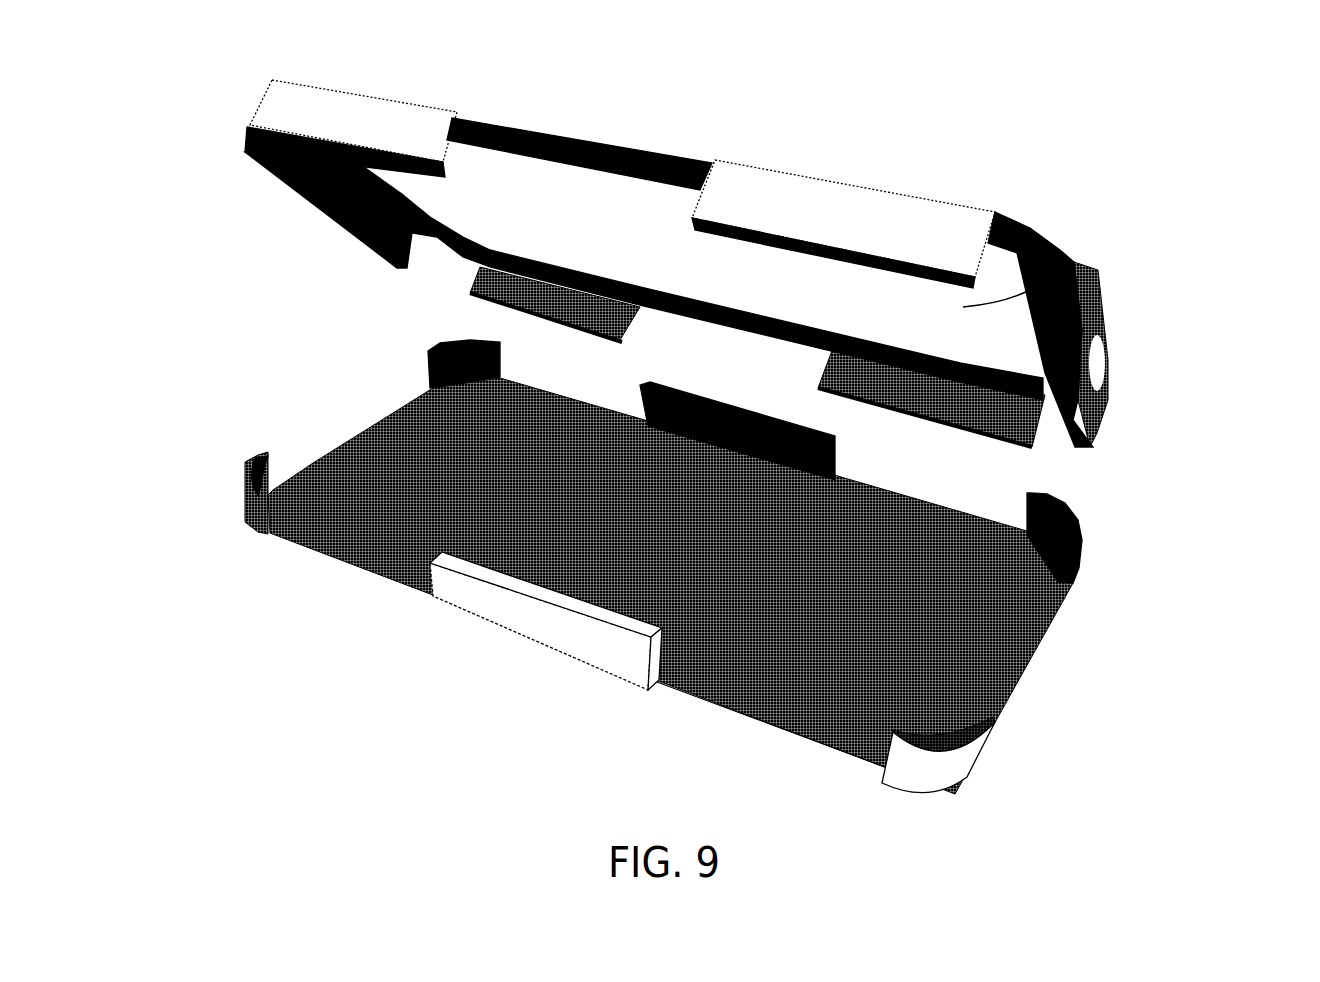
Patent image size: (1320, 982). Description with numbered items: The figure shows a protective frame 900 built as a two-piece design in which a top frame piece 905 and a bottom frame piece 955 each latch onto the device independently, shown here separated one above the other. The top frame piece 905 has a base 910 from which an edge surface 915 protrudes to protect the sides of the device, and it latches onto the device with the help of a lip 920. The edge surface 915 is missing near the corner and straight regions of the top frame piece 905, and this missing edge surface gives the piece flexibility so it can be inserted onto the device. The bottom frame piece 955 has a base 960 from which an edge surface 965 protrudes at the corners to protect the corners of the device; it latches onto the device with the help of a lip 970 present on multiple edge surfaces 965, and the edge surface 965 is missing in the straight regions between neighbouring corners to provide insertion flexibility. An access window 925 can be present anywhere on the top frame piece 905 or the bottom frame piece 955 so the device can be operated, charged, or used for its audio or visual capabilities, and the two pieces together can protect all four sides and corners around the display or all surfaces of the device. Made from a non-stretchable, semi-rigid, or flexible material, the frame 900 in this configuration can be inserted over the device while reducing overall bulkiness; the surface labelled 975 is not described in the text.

The protective frame 900 is at (1050, 834).
The top frame piece 905 is at (866, 155).
The base 910 is at (783, 330).
The edge surface 915 is at (480, 281).
The lip 920 is at (1098, 433).
The access window 925 is at (1097, 340).
The bottom frame piece 955 is at (463, 645).
The base 960 is at (777, 694).
The edge surface 965 is at (640, 403).
The lip 970 is at (1067, 532).
The base platform surface 975 is at (860, 577).